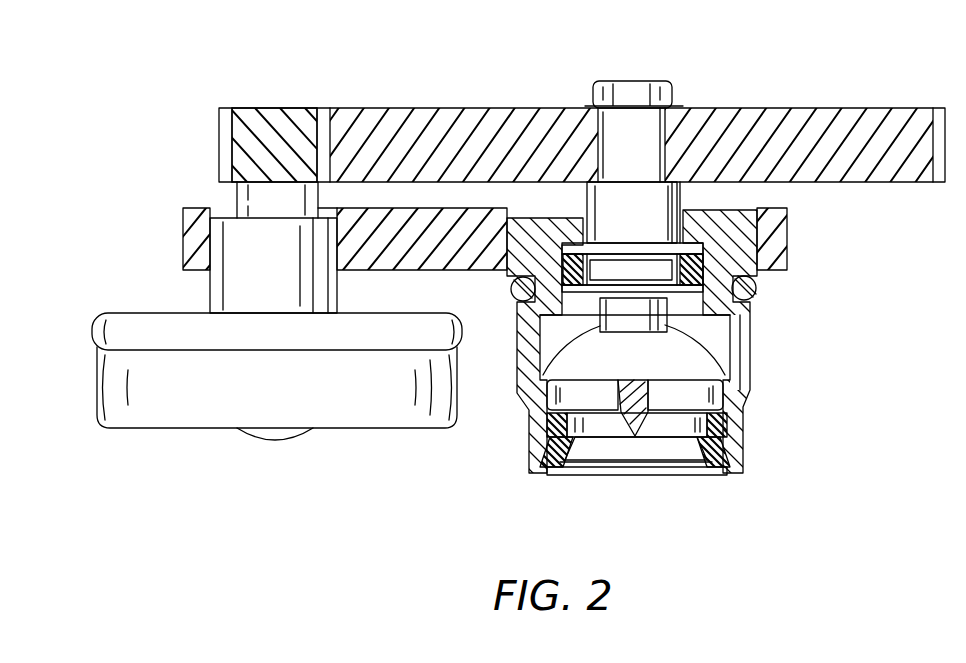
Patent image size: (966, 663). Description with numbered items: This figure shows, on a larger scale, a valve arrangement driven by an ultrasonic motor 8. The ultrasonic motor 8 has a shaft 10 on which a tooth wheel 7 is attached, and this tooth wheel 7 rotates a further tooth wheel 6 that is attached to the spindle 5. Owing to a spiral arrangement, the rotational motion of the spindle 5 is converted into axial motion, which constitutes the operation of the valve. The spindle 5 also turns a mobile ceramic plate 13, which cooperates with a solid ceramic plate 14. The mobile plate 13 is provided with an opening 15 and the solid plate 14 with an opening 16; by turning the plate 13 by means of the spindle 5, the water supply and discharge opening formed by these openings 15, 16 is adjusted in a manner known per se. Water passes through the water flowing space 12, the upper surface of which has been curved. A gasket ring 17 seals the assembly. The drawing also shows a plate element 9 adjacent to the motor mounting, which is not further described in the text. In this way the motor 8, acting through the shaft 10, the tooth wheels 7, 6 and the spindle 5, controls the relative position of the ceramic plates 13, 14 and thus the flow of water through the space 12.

The spindle 5 is at (677, 193).
The tooth wheel 6 is at (815, 108).
The tooth wheel 7 is at (298, 113).
The ultrasonic motor 8 is at (165, 397).
The support plate 9 is at (780, 240).
The shaft of the ultrasonic motor 10 is at (238, 200).
The water flowing space 12 is at (700, 353).
The mobile ceramic plate 13 is at (650, 383).
The solid ceramic plate 14 is at (727, 423).
The opening of the plate 13 15 is at (527, 412).
The opening of the plate 14 16 is at (740, 457).
The gasket ring 17 is at (718, 477).